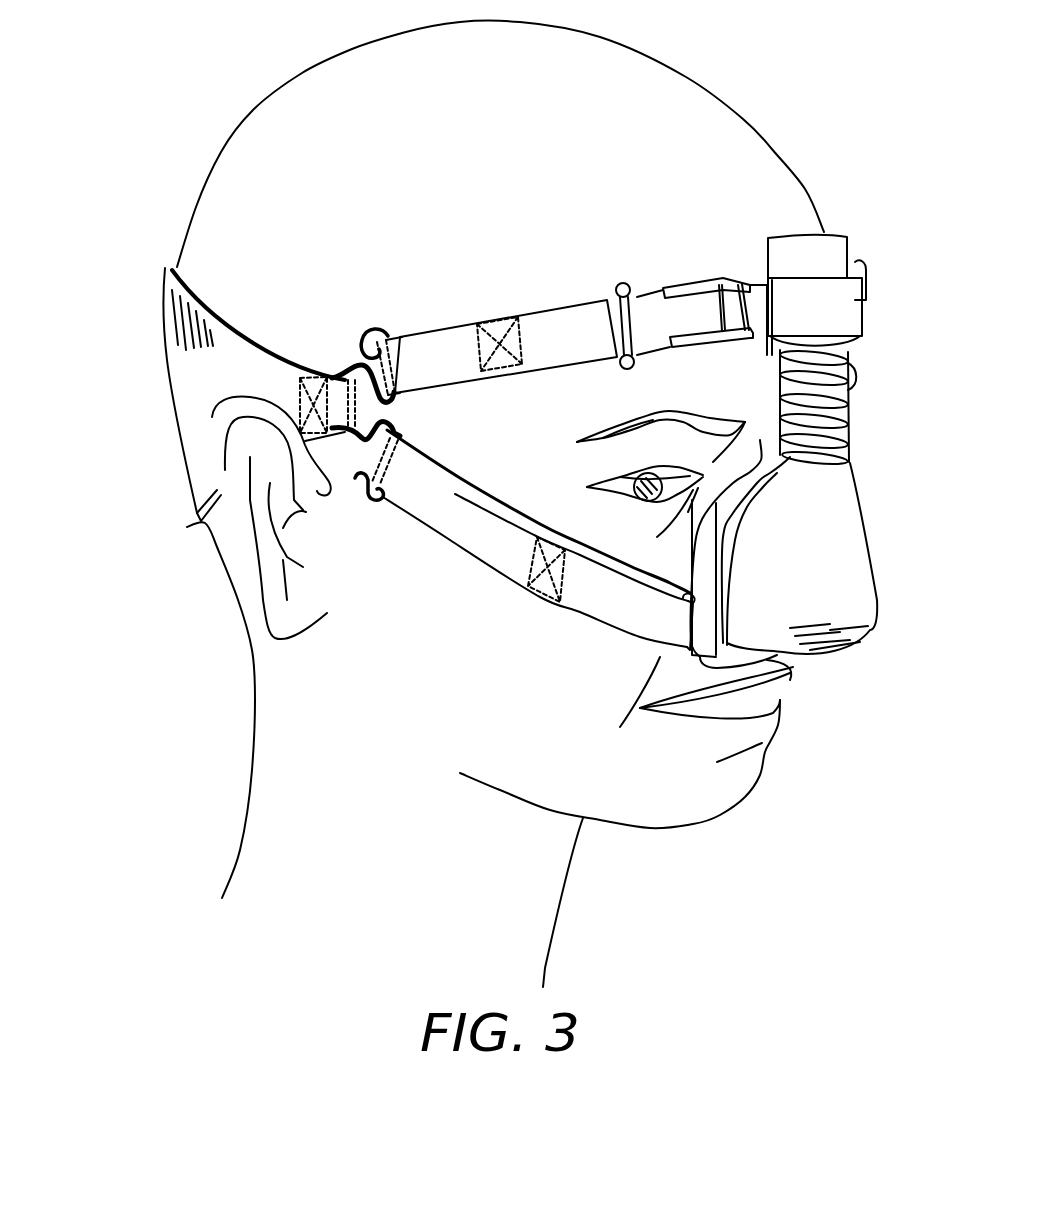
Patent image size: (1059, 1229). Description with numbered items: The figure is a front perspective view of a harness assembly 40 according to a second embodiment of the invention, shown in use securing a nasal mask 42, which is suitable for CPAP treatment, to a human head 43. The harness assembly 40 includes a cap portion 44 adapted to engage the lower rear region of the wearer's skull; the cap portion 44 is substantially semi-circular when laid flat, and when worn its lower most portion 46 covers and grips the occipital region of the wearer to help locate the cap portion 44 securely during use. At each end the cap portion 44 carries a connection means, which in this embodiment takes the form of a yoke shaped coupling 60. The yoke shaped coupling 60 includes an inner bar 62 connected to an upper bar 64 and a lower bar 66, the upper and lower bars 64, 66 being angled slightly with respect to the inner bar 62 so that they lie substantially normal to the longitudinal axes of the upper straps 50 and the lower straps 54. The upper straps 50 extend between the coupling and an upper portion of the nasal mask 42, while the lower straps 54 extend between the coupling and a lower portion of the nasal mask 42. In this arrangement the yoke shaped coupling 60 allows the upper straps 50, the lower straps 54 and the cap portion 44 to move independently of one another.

The harness assembly 40 is at (130, 502).
The nasal mask 42 is at (840, 517).
The human head 43 is at (670, 95).
The cap portion 44 is at (237, 353).
The lower most portion 46 is at (199, 522).
The upper straps 50 is at (573, 313).
The lower straps 54 is at (450, 498).
The yoke shaped coupling 60 is at (428, 413).
The inner bar 62 is at (340, 370).
The upper bar 64 is at (390, 337).
The lower bar 66 is at (370, 503).